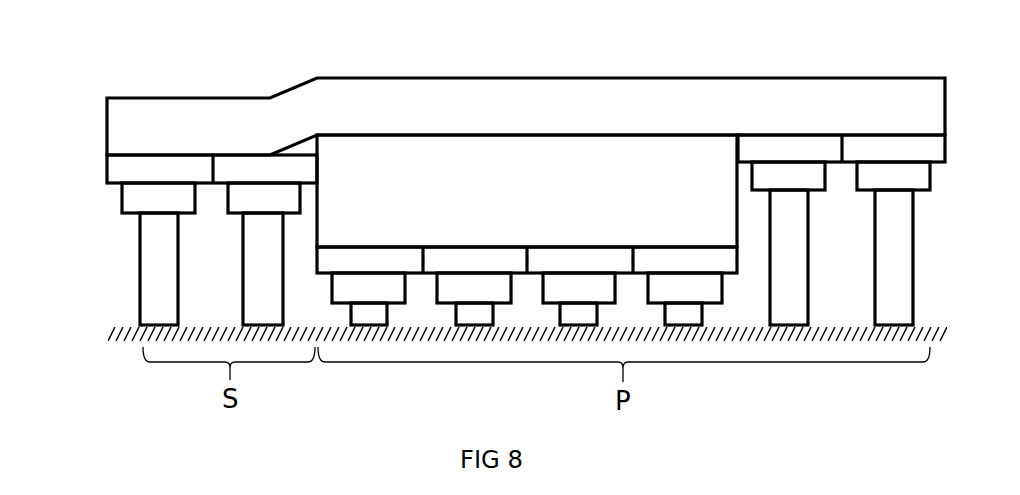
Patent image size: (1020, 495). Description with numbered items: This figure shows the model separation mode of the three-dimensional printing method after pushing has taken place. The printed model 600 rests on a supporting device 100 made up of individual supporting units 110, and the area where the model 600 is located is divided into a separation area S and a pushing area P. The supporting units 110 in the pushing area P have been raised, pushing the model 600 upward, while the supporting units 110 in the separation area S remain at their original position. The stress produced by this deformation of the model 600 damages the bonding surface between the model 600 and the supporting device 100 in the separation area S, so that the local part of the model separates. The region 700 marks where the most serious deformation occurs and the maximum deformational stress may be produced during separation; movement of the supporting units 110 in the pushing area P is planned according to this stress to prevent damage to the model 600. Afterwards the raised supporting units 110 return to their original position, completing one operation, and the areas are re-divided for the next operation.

The supporting device 100 is at (156, 339).
The supporting unit 110 is at (138, 269).
The model to be separated after printing 600 is at (104, 139).
The area subjecting to maximum deformational stress at the time of separation 700 is at (309, 76).